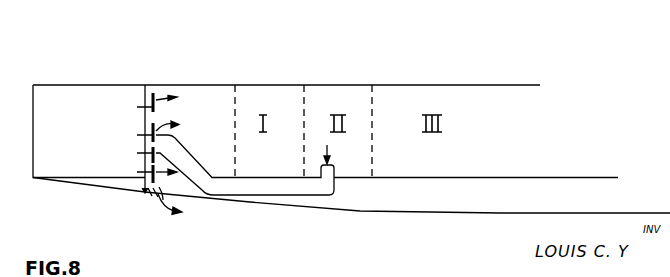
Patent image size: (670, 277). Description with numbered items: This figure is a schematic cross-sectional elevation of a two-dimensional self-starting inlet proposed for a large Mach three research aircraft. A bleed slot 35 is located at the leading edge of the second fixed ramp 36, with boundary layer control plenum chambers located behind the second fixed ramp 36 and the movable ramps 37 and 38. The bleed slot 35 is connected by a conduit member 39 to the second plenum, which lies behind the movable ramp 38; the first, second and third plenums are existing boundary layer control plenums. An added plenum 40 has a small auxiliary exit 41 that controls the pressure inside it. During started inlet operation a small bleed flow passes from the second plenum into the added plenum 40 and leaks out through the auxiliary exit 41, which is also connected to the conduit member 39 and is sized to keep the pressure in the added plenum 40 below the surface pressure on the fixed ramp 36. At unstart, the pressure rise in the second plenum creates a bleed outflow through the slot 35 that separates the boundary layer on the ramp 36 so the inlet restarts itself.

The bleed slot 35 is at (148, 108).
The second fixed ramp 36 is at (217, 140).
The movable ramp 37 is at (276, 103).
The movable ramp 38 is at (350, 94).
The conduit member 39 is at (229, 188).
The added plenum 40 is at (192, 196).
The auxiliary exit 41 is at (150, 199).